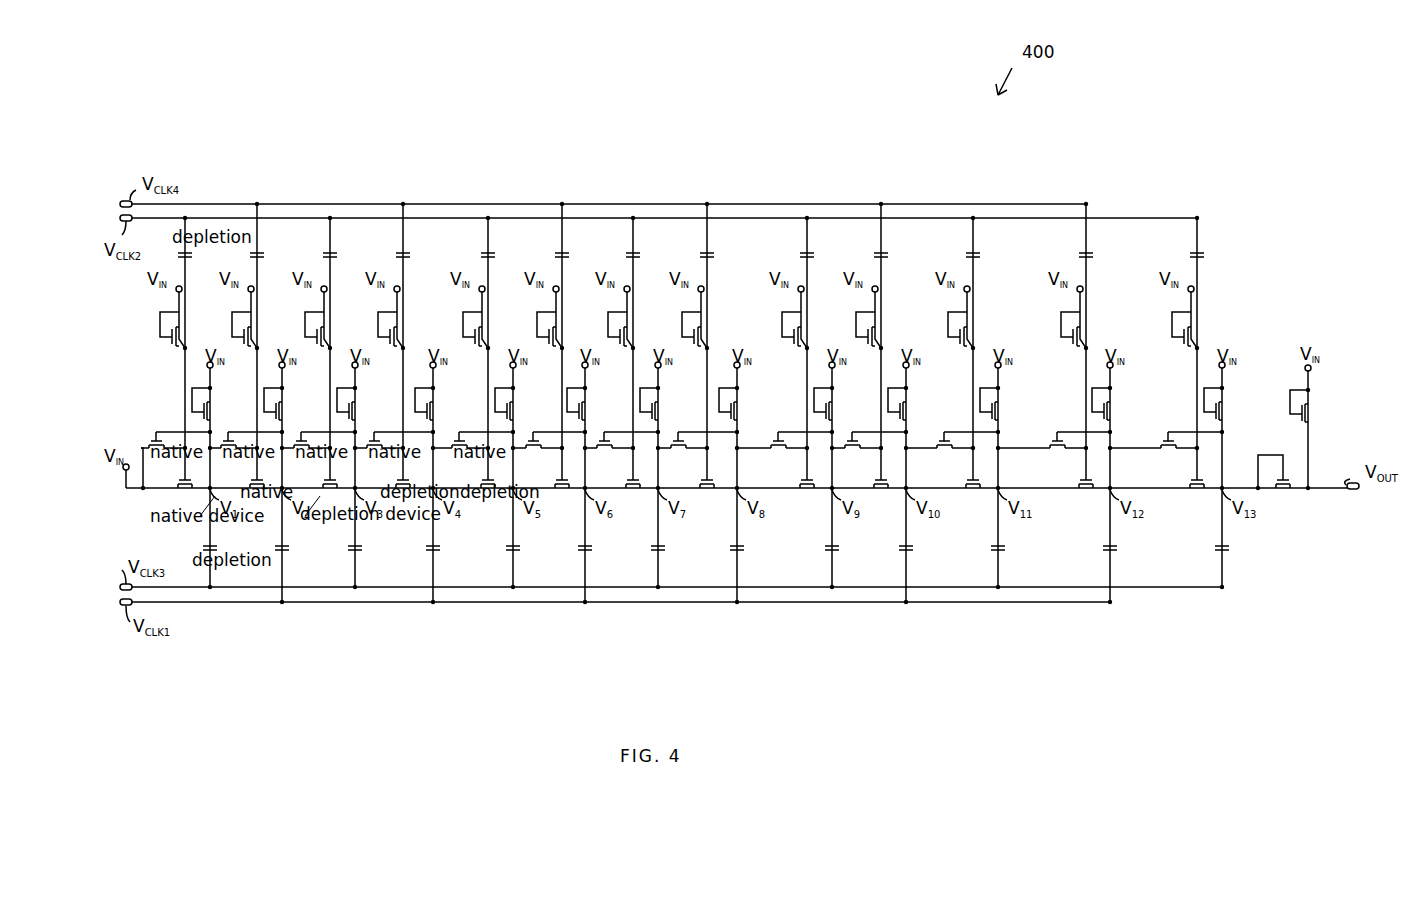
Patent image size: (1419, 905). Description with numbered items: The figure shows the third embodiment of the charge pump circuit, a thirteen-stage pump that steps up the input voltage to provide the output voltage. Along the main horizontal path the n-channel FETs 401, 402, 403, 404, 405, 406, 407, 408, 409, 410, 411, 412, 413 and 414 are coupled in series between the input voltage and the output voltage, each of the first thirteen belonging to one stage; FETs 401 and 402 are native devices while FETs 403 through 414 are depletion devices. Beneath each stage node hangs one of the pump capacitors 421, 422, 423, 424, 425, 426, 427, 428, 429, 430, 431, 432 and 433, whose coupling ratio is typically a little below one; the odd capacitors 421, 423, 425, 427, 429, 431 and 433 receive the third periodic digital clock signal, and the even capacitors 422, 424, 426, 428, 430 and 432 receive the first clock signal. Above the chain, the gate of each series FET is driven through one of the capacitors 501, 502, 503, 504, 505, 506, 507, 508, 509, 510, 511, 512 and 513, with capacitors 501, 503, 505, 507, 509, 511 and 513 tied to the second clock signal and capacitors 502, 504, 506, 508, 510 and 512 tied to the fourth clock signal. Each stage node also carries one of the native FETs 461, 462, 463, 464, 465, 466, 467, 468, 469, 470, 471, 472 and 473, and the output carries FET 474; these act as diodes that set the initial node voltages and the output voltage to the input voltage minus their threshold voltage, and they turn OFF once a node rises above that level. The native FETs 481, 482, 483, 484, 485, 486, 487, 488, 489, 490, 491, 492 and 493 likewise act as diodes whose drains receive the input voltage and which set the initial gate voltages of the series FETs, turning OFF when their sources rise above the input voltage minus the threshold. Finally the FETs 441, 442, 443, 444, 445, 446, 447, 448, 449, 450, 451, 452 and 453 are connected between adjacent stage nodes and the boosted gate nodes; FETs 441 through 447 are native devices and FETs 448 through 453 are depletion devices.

The n-channel FET 401 is at (179, 481).
The n-channel FET 402 is at (251, 481).
The n-channel FET 403 is at (324, 481).
The n-channel FET 404 is at (397, 481).
The n-channel FET 405 is at (482, 481).
The n-channel FET 406 is at (556, 481).
The n-channel FET 407 is at (627, 481).
The n-channel FET 408 is at (701, 481).
The n-channel FET 409 is at (801, 481).
The n-channel FET 410 is at (875, 481).
The n-channel FET 411 is at (967, 481).
The n-channel FET 412 is at (1080, 481).
The n-channel FET 413 is at (1191, 481).
The n-channel FET 414 is at (1282, 490).
The capacitor 421 is at (214, 549).
The capacitor 422 is at (286, 549).
The capacitor 423 is at (359, 549).
The capacitor 424 is at (437, 549).
The capacitor 425 is at (517, 549).
The capacitor 426 is at (589, 549).
The capacitor 427 is at (662, 549).
The capacitor 428 is at (741, 549).
The capacitor 429 is at (836, 549).
The capacitor 430 is at (910, 549).
The capacitor 431 is at (1002, 549).
The capacitor 432 is at (1114, 549).
The capacitor 433 is at (1226, 549).
The n-channel FET 441 is at (148, 441).
The n-channel FET 442 is at (227, 439).
The n-channel FET 443 is at (300, 439).
The n-channel FET 444 is at (373, 439).
The n-channel FET 445 is at (458, 439).
The n-channel FET 446 is at (532, 439).
The n-channel FET 447 is at (603, 439).
The n-channel FET 448 is at (677, 439).
The n-channel FET 449 is at (777, 439).
The n-channel FET 450 is at (851, 439).
The n-channel FET 451 is at (943, 439).
The n-channel FET 452 is at (1056, 439).
The n-channel FET 453 is at (1167, 439).
The n-channel FET 461 is at (206, 408).
The n-channel FET 462 is at (278, 408).
The n-channel FET 463 is at (351, 408).
The n-channel FET 464 is at (429, 408).
The n-channel FET 465 is at (509, 408).
The n-channel FET 466 is at (581, 408).
The n-channel FET 467 is at (654, 408).
The n-channel FET 468 is at (733, 408).
The n-channel FET 469 is at (828, 408).
The n-channel FET 470 is at (902, 408).
The n-channel FET 471 is at (994, 408).
The n-channel FET 472 is at (1106, 408).
The n-channel FET 473 is at (1218, 408).
The n-channel FET 474 is at (1308, 414).
The n-channel FET 481 is at (172, 345).
The n-channel FET 482 is at (237, 337).
The n-channel FET 483 is at (310, 337).
The n-channel FET 484 is at (383, 337).
The n-channel FET 485 is at (468, 337).
The n-channel FET 486 is at (542, 337).
The n-channel FET 487 is at (613, 337).
The n-channel FET 488 is at (687, 337).
The n-channel FET 489 is at (787, 337).
The n-channel FET 490 is at (861, 337).
The n-channel FET 491 is at (953, 337).
The n-channel FET 492 is at (1066, 337).
The n-channel FET 493 is at (1177, 337).
The capacitor 501 is at (188, 258).
The capacitor 502 is at (260, 258).
The capacitor 503 is at (333, 258).
The capacitor 504 is at (406, 258).
The capacitor 505 is at (491, 258).
The capacitor 506 is at (565, 258).
The capacitor 507 is at (636, 258).
The capacitor 508 is at (710, 258).
The capacitor 509 is at (810, 258).
The capacitor 510 is at (884, 258).
The capacitor 511 is at (976, 258).
The capacitor 512 is at (1089, 258).
The capacitor 513 is at (1200, 258).